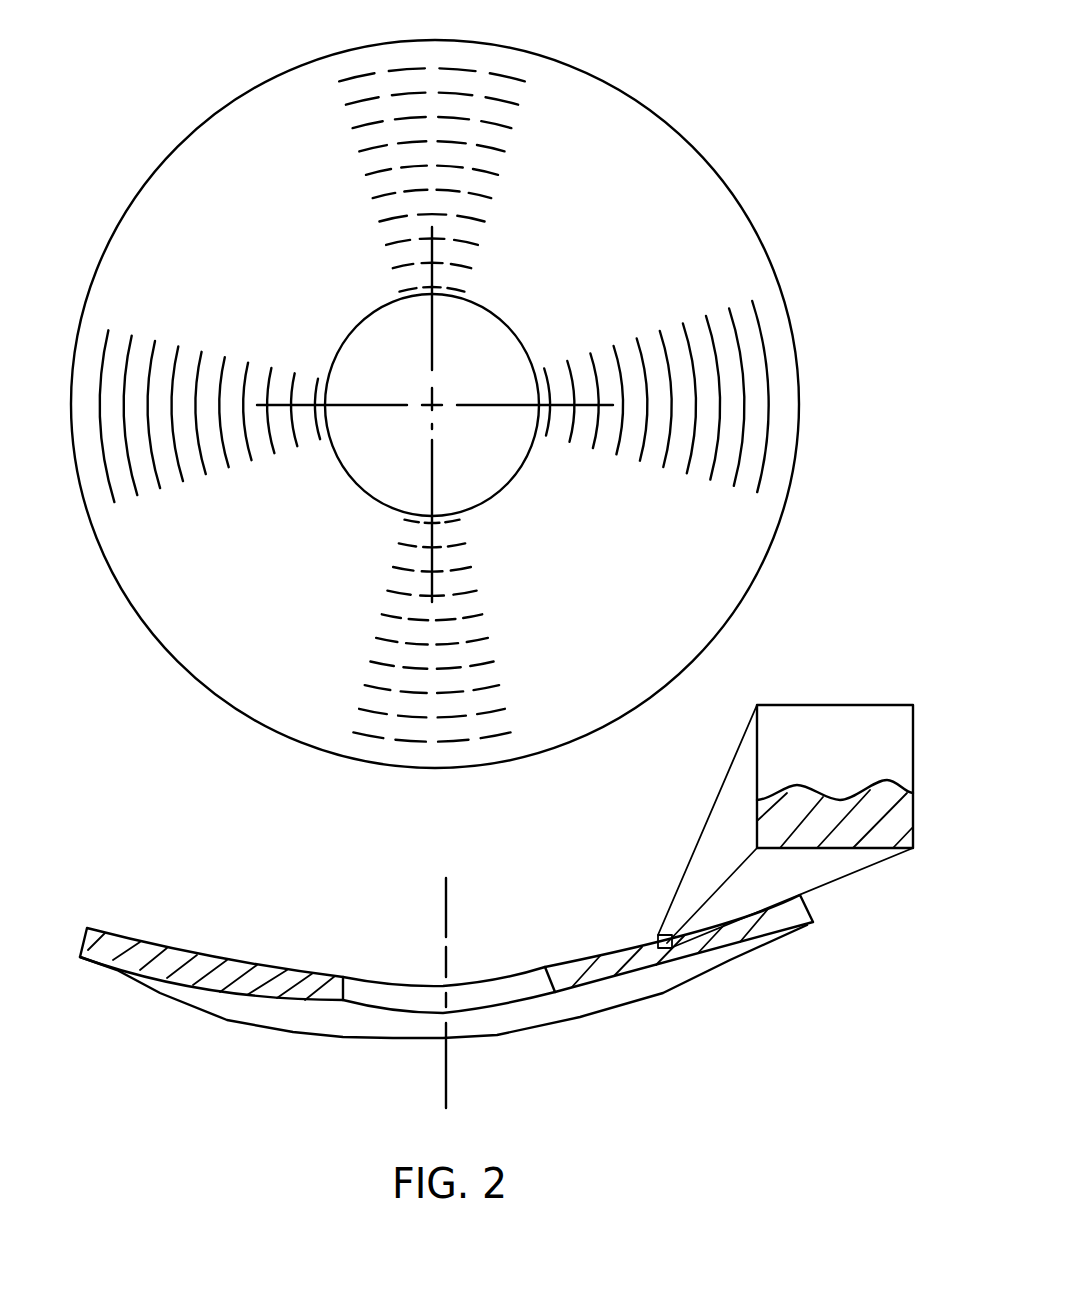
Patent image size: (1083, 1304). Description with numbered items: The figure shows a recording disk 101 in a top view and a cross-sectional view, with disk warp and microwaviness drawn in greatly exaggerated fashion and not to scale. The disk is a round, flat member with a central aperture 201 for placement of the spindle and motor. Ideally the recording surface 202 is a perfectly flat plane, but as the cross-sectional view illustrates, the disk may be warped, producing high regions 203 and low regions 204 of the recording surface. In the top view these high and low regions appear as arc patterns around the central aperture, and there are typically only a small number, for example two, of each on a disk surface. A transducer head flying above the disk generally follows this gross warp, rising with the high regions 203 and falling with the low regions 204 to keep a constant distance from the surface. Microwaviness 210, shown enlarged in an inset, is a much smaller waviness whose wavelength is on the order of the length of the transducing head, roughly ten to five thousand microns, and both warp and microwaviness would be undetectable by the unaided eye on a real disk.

The recording disk 101 is at (435, 393).
The central aperture 201 is at (510, 442).
The recording surface 202 is at (253, 219).
The high regions 203 is at (737, 377).
The low regions 204 is at (393, 88).
The microwaviness 210 is at (823, 788).